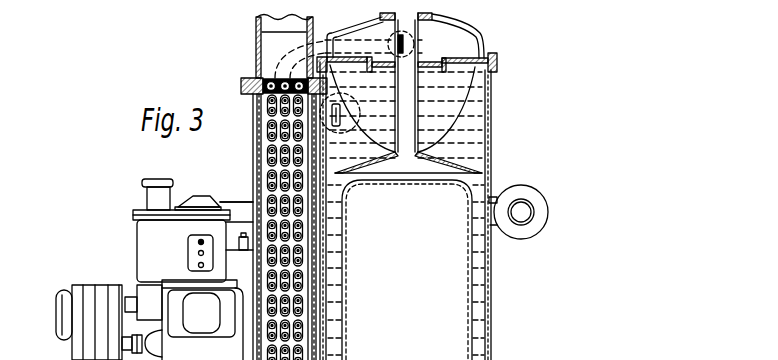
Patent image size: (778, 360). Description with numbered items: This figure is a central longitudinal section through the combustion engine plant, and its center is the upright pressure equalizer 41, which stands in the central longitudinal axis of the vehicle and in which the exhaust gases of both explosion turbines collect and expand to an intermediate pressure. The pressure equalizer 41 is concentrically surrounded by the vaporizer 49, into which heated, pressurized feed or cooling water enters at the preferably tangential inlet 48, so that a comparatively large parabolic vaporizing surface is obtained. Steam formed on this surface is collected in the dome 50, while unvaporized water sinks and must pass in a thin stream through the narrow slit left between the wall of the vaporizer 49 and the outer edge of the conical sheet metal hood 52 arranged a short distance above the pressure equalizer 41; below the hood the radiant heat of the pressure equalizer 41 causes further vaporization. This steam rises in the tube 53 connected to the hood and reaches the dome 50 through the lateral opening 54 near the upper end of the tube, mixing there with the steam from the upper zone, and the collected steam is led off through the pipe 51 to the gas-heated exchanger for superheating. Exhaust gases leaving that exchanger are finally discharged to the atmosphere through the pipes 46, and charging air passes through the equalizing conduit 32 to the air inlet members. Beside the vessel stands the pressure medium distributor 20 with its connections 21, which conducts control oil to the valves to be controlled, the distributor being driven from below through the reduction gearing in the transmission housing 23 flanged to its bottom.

The pressure medium distributor 20 is at (145, 240).
The connections 21 is at (197, 265).
The transmission housing 23 is at (149, 320).
The equalizing conduit 32 is at (241, 203).
The pressure equalizer 41 is at (463, 358).
The pipes 46 is at (257, 27).
The inlet 48 is at (345, 113).
The vaporizer 49 is at (480, 110).
The dome 50 is at (467, 43).
The pipe 51 is at (317, 46).
The conical sheet metal hood 52 is at (467, 167).
The tube 53 is at (416, 118).
The lateral opening 54 is at (417, 44).